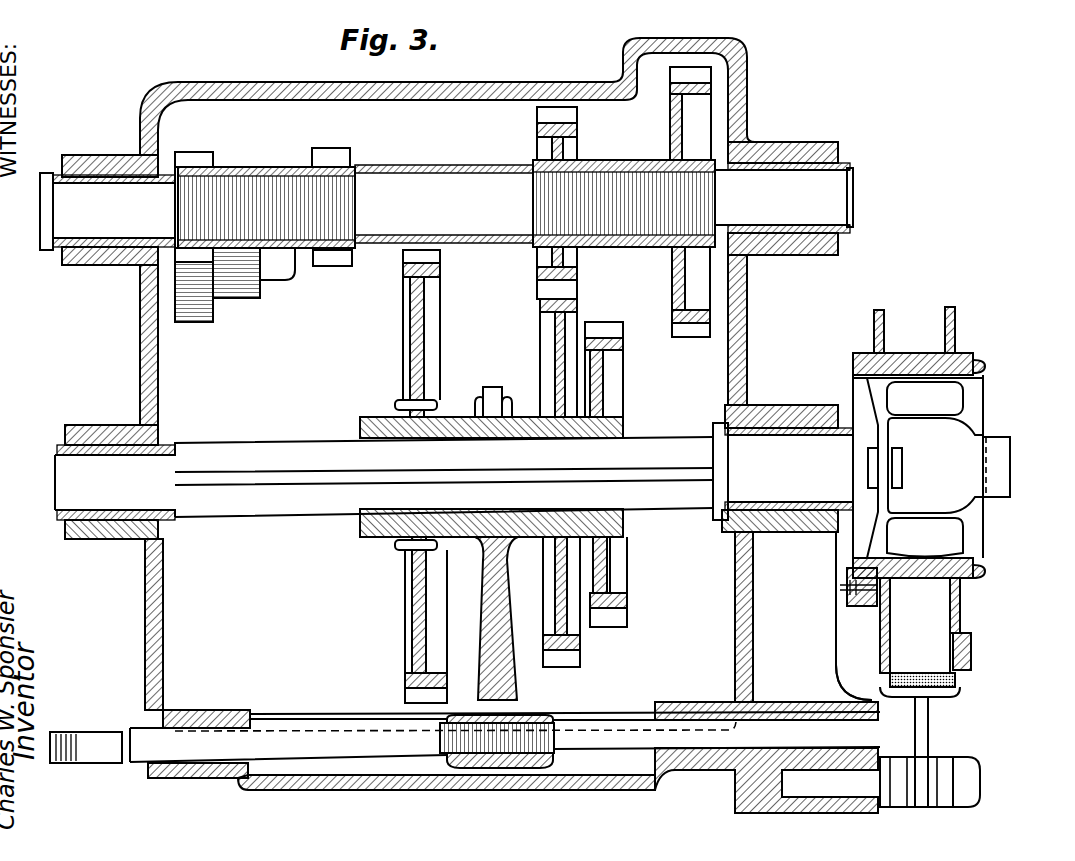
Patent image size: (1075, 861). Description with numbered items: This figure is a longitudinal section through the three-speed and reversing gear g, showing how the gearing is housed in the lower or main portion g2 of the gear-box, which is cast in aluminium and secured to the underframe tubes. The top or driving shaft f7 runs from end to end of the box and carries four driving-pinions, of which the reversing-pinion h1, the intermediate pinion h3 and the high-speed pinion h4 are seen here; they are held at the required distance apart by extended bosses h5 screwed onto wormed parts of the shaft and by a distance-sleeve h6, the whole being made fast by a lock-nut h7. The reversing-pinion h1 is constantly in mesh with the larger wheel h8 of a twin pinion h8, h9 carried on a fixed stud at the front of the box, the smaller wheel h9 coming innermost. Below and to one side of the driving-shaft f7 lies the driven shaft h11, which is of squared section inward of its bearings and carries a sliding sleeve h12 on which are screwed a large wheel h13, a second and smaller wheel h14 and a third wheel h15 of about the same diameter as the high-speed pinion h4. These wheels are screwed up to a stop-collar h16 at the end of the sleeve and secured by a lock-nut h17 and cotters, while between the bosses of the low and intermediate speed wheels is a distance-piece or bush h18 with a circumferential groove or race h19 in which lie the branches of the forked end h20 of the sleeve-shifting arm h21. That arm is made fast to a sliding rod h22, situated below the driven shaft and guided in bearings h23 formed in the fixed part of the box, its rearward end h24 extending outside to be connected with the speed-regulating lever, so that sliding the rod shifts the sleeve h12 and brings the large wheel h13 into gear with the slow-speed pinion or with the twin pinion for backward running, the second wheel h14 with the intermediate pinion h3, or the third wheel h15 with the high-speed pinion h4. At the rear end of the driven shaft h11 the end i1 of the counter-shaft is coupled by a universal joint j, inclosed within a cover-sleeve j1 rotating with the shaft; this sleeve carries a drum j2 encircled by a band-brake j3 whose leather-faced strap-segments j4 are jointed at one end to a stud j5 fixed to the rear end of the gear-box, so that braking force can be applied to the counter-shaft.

The top or driving shaft f7 is at (107, 209).
The three-speed and reversing gear g is at (465, 425).
The lower or main portion of gear-box g2 is at (134, 354).
The reversing-pinion h1 is at (203, 151).
The intermediate pinion h3 is at (537, 115).
The high-speed pinion h4 is at (670, 76).
The extended bosses h5 is at (282, 167).
The distance-sleeve h6 is at (452, 160).
The lock-nut h7 is at (732, 228).
The larger wheel of twin pinion h8 is at (194, 322).
The smaller wheel of twin pinion h9 is at (247, 298).
The driven shaft h11 is at (315, 443).
The sliding sleeve h12 is at (512, 438).
The large wheel h13 is at (448, 261).
The second and smaller wheel h14 is at (540, 355).
The third wheel h15 is at (624, 380).
The stop-collar h16 is at (624, 416).
The lock-nut h17 is at (390, 409).
The distance-piece or bush h18 is at (477, 403).
The circumferential groove or race h19 is at (510, 403).
The forked end h20 is at (490, 387).
The sleeve-shifting arm h21 is at (508, 632).
The sliding rod h22 is at (555, 716).
The bearings h23 is at (222, 715).
The rearward end of sliding rod h24 is at (908, 726).
The end of counter-shaft i1 is at (1010, 468).
The universal joint j is at (1016, 400).
The cover-sleeve j1 is at (982, 582).
The drum j2 is at (925, 625).
The band-brake j3 is at (862, 672).
The packing j4 is at (960, 680).
The stud j5 is at (983, 765).